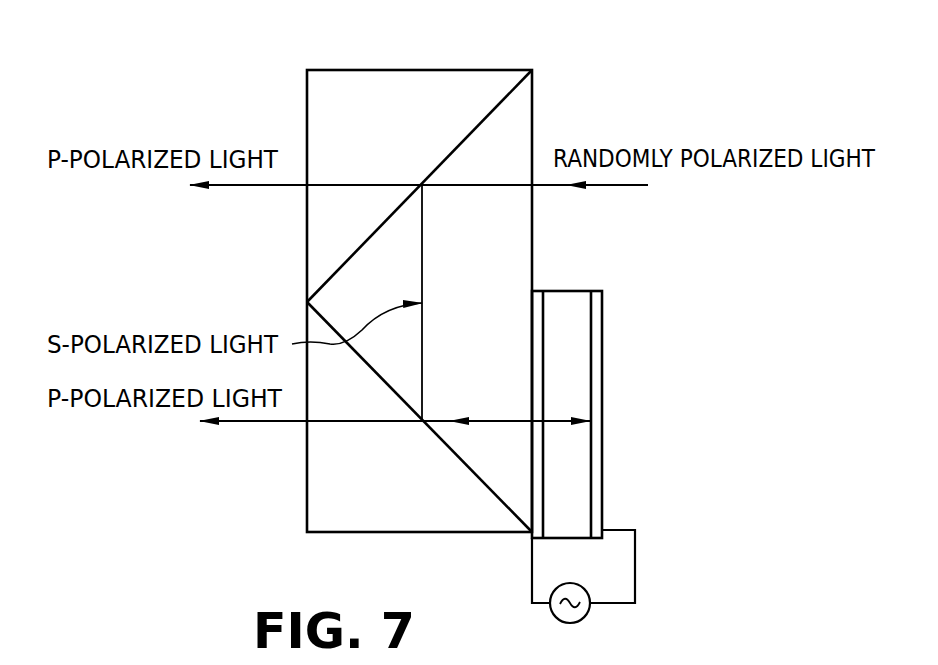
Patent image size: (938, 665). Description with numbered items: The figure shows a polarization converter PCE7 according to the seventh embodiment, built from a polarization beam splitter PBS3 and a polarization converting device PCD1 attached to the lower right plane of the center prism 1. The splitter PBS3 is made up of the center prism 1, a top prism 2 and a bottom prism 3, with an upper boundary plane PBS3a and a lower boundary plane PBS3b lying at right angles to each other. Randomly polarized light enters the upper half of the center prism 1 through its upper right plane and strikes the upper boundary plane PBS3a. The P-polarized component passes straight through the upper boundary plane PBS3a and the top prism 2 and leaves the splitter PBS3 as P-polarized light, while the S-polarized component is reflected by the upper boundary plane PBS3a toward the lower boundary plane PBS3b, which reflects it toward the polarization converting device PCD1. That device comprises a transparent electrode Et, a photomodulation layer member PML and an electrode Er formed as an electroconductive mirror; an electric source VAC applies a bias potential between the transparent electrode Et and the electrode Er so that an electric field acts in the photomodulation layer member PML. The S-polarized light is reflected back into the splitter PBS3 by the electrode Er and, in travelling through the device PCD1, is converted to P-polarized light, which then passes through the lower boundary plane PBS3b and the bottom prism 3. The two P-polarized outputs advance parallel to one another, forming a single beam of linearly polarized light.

The polarization beam splitter PBS3 is at (484, 70).
The upper boundary plane PBS3a is at (470, 135).
The lower boundary plane PBS3b is at (472, 467).
The center prism 1 is at (518, 120).
The top prism 2 is at (327, 107).
The bottom prism 3 is at (332, 480).
The polarization converter PCE7 is at (545, 143).
The photomodulation layer member PML is at (563, 312).
The transparent electrode Et is at (533, 288).
The electrode Er is at (592, 355).
The polarization converting device PCD1 is at (610, 471).
The electric source VAC is at (585, 618).